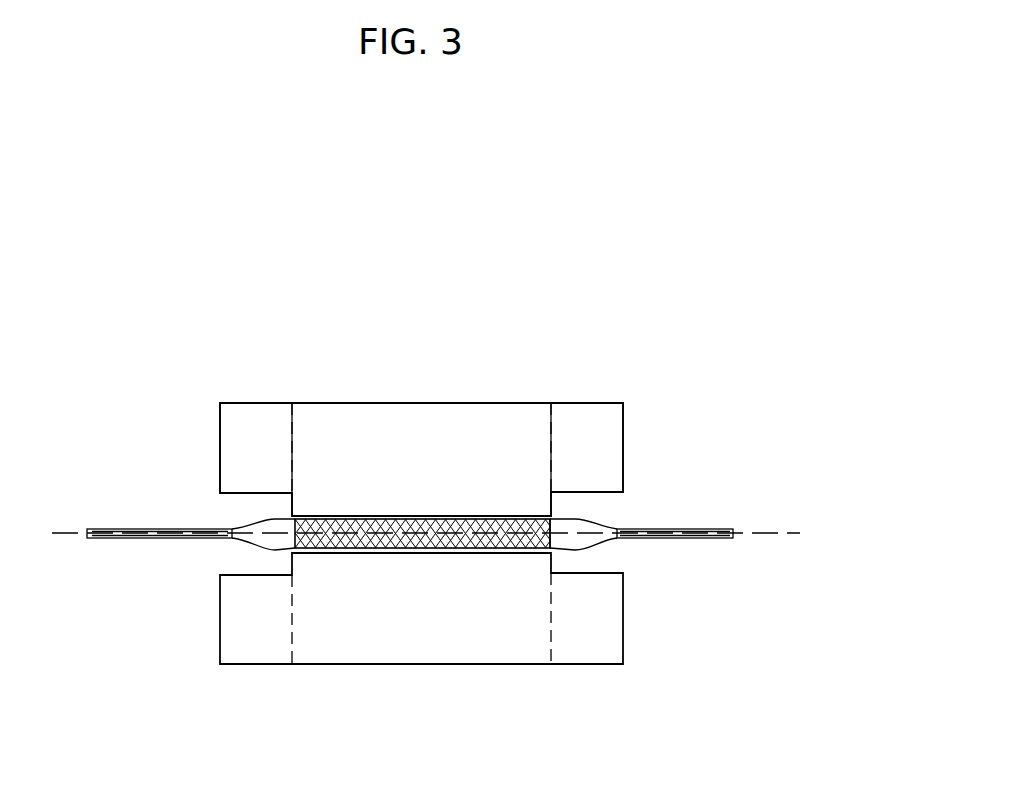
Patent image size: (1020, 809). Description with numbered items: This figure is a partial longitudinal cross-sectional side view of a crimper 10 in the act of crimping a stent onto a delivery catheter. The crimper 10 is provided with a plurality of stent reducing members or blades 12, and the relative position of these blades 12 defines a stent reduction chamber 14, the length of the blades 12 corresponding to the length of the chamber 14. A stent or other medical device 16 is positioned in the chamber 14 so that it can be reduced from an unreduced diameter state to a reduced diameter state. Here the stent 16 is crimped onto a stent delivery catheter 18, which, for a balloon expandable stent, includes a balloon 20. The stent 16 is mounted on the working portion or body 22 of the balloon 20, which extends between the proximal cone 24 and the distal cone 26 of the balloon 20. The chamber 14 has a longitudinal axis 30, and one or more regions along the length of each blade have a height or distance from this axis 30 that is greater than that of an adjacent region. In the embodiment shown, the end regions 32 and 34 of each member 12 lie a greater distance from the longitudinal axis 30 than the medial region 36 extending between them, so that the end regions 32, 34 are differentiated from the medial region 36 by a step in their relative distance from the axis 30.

The crimper 10 is at (521, 300).
The stent reducing members or blades 12 is at (355, 403).
The stent reduction chamber 14 is at (346, 505).
The stent 16 is at (425, 548).
The stent delivery catheter 18 is at (686, 528).
The balloon 20 is at (568, 566).
The working portion or body 22 is at (450, 548).
The proximal cone 24 is at (282, 542).
The distal cone 26 is at (600, 545).
The longitudinal axis 30 is at (787, 530).
The end region 32 is at (247, 492).
The end region 34 is at (590, 492).
The medial region 36 is at (430, 490).